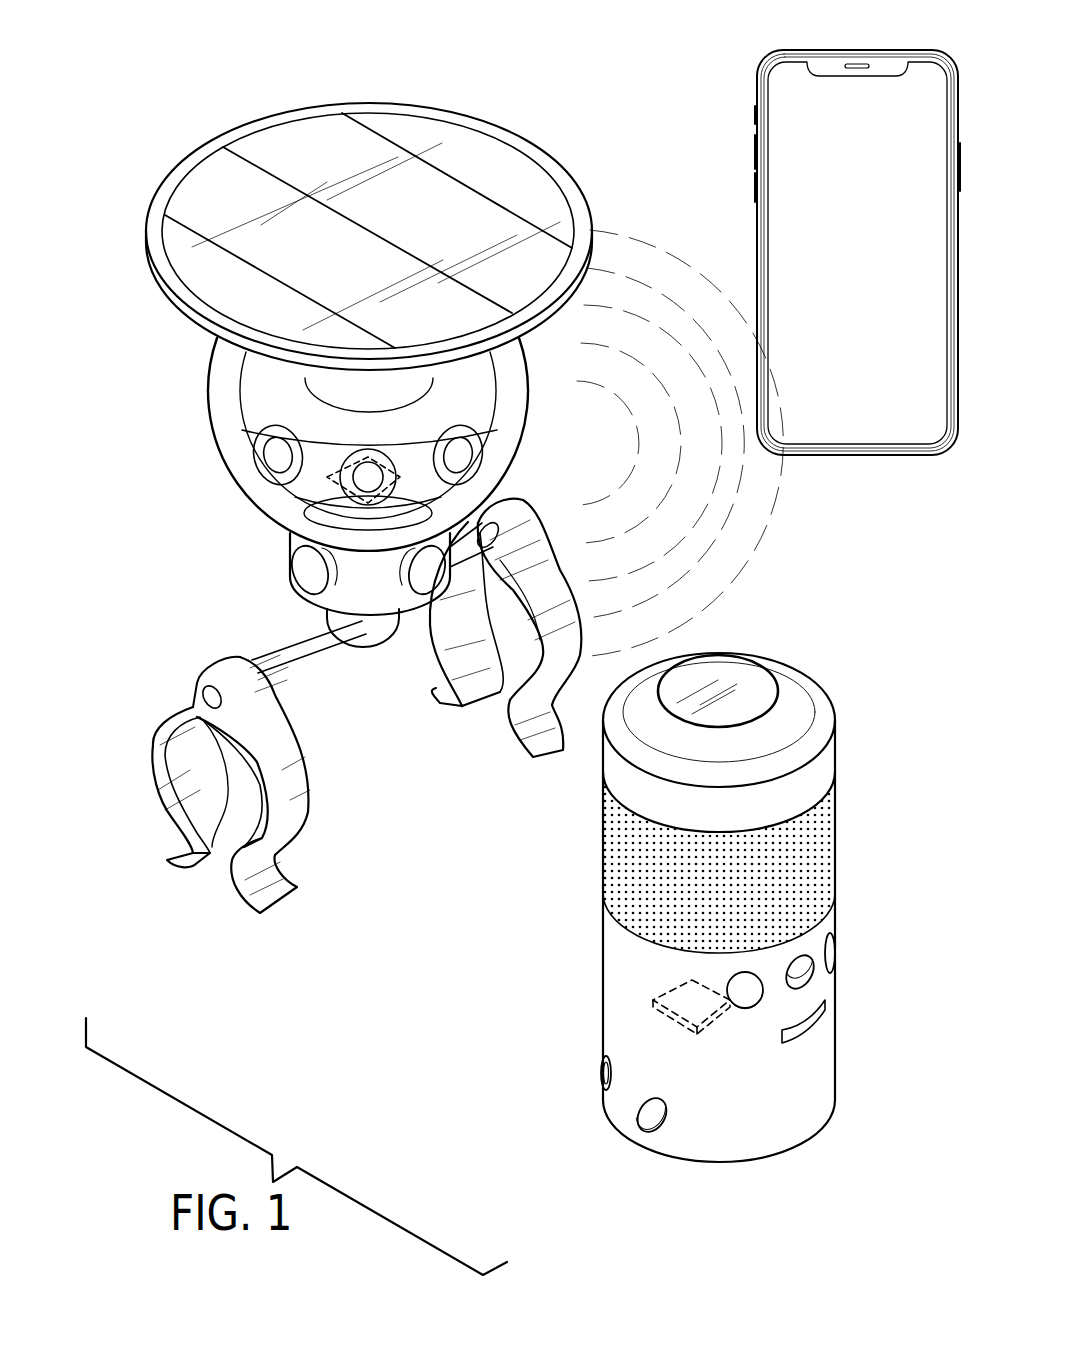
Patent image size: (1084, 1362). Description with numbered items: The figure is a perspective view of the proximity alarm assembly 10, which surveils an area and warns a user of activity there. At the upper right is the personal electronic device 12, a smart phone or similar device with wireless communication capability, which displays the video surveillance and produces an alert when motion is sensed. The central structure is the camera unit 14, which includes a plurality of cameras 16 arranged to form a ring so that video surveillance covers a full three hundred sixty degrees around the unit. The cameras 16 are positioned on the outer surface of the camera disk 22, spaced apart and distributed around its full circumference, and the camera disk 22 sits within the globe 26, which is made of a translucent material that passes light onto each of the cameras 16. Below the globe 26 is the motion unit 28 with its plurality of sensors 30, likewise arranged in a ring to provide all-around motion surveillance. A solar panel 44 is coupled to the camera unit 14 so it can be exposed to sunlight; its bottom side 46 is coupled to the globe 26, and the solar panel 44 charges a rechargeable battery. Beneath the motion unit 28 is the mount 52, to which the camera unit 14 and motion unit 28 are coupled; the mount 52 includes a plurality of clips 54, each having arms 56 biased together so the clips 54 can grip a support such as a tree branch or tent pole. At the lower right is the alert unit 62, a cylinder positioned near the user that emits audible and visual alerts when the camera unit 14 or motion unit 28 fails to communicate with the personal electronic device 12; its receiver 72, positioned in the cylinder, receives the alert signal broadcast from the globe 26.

The proximity alarm assembly 10 is at (184, 121).
The personal electronic device 12 is at (766, 61).
The camera unit 14 is at (192, 408).
The cameras 16 is at (367, 475).
The camera disk 22 is at (250, 378).
The globe 26 is at (276, 457).
The motion unit 28 is at (277, 573).
The sensors 30 is at (425, 578).
The solar panel 44 is at (170, 172).
The bottom side 46 is at (358, 145).
The mount 52 is at (139, 714).
The clips 54 is at (303, 778).
The arms 56 is at (158, 775).
The alert unit 62 is at (858, 748).
The receiver 72 is at (653, 1000).